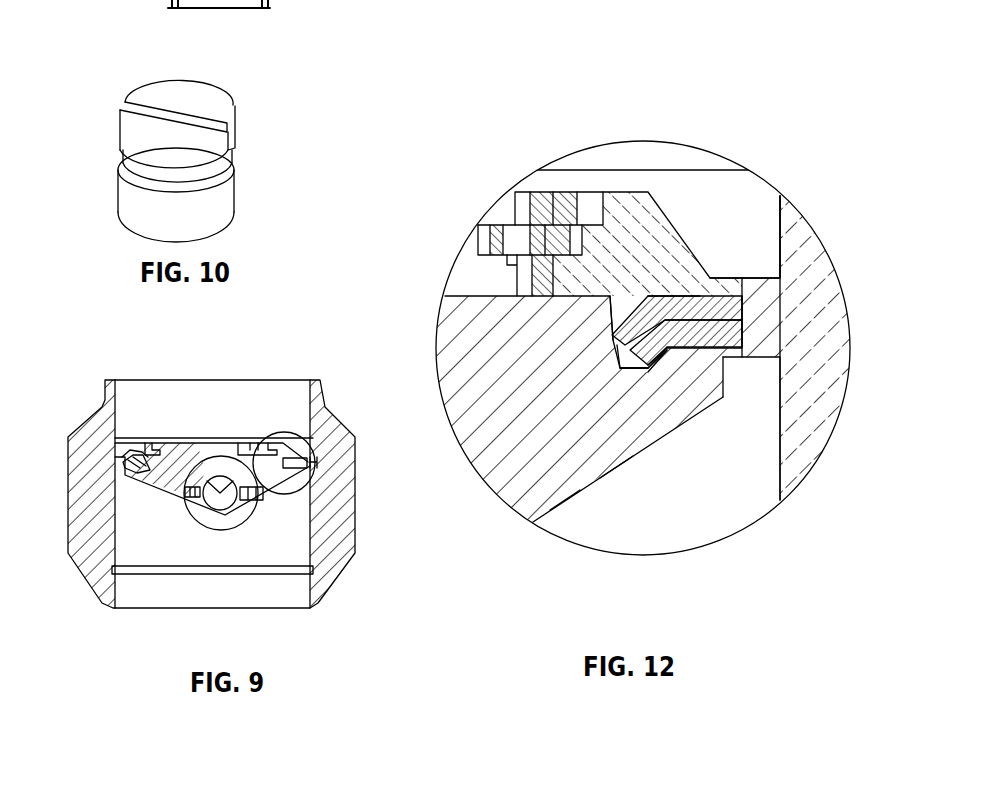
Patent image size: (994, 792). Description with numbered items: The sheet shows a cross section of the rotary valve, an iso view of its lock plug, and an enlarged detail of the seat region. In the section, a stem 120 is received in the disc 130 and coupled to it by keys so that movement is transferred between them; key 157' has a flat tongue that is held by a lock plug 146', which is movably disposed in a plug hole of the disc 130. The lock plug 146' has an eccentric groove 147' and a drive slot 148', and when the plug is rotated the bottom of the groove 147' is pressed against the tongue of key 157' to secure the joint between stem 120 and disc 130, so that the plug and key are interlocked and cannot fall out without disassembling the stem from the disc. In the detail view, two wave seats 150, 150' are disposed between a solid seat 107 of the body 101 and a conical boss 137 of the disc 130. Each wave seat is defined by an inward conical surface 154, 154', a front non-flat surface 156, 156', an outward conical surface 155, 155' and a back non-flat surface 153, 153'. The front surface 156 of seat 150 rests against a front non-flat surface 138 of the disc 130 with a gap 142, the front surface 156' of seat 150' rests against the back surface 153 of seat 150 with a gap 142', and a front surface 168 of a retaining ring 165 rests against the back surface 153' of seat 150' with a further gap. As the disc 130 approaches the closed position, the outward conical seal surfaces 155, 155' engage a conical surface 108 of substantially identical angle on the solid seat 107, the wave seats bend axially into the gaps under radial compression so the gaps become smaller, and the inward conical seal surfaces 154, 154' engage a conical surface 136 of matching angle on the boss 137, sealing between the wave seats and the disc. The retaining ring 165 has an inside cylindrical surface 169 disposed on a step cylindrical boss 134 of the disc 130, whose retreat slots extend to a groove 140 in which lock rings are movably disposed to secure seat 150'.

In FIG. 9, the body 101 is at (337, 492).
In FIG. 9, the solid seat 107 is at (316, 452).
In FIG. 12, the solid seat 107 is at (767, 305).
In FIG. 12, the conical surface 108 is at (745, 325).
In FIG. 9, the stem 120 is at (236, 513).
In FIG. 9, the disc 130 is at (185, 458).
In FIG. 12, the disc 130 is at (567, 496).
In FIG. 12, the step cylindrical boss 134 is at (555, 250).
In FIG. 12, the conical surface 136 is at (614, 316).
In FIG. 9, the conical boss 137 is at (144, 466).
In FIG. 12, the conical boss 137 is at (587, 375).
In FIG. 12, the front non-flat surface 138 is at (677, 350).
In FIG. 9, the groove 140 is at (156, 450).
In FIG. 12, the groove 140 is at (487, 236).
In FIG. 12, the gap 142 is at (584, 483).
In FIG. 12, the gap 142' is at (555, 433).
In FIG. 10, the lock plug 146' is at (226, 123).
In FIG. 9, the lock plug 146' is at (215, 400).
In FIG. 10, the eccentric groove 147' is at (221, 195).
In FIG. 10, the drive slot 148' is at (143, 96).
In FIG. 12, the wave seat 150 is at (824, 445).
In FIG. 12, the wave seat 150' is at (736, 241).
In FIG. 12, the back non-flat surface 153 is at (742, 410).
In FIG. 12, the back non-flat surface 153' is at (789, 219).
In FIG. 12, the inward conical surface 154 is at (496, 510).
In FIG. 12, the inward conical surface 154' is at (490, 323).
In FIG. 12, the outward conical surface 155 is at (809, 370).
In FIG. 12, the outward conical surface 155' is at (810, 261).
In FIG. 12, the front non-flat surface 156 is at (735, 461).
In FIG. 12, the front non-flat surface 156' is at (720, 215).
In FIG. 9, the key 157' is at (242, 574).
In FIG. 9, the retaining ring 165 is at (140, 442).
In FIG. 12, the retaining ring 165 is at (630, 217).
In FIG. 12, the front surface 168 is at (673, 297).
In FIG. 12, the inside cylindrical surface 169 is at (517, 222).